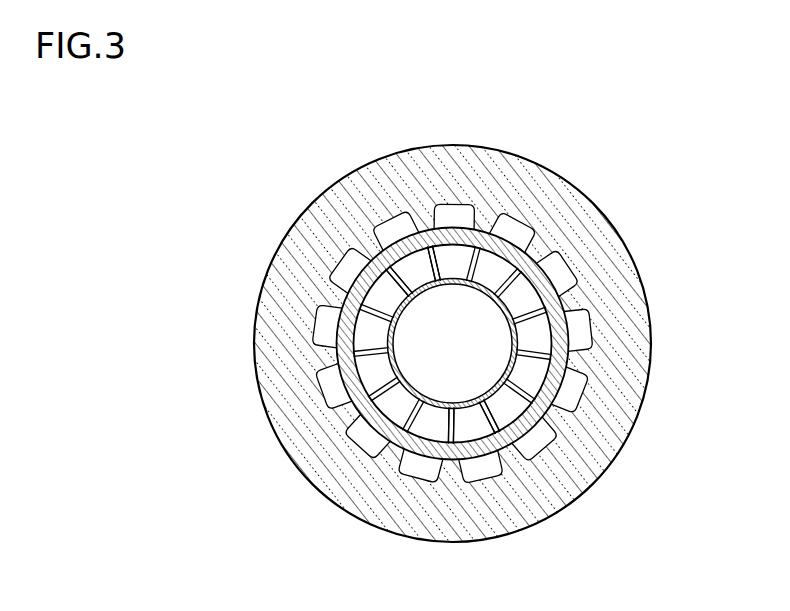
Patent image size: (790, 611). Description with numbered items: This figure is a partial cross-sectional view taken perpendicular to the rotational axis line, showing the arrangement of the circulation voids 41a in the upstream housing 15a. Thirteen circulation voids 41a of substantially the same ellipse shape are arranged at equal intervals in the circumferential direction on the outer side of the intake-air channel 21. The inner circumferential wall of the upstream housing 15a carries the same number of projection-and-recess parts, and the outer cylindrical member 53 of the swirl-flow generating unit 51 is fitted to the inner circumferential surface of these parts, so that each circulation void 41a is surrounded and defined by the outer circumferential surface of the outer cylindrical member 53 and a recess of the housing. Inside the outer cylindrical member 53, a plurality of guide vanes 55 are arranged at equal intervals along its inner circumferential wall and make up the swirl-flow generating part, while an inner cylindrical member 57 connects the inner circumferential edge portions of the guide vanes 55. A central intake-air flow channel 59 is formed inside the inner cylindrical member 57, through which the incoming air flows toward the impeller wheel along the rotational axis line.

The upstream housing 15a is at (617, 449).
The circulation voids 41a is at (555, 262).
The outer cylindrical member 53 is at (332, 362).
The guide vanes 55 is at (480, 263).
The inner cylindrical member 57 is at (413, 275).
The intake-air channel 21 is at (473, 432).
The swirl-flow generating unit 51 is at (465, 393).
The central intake-air flow channel 59 is at (468, 358).